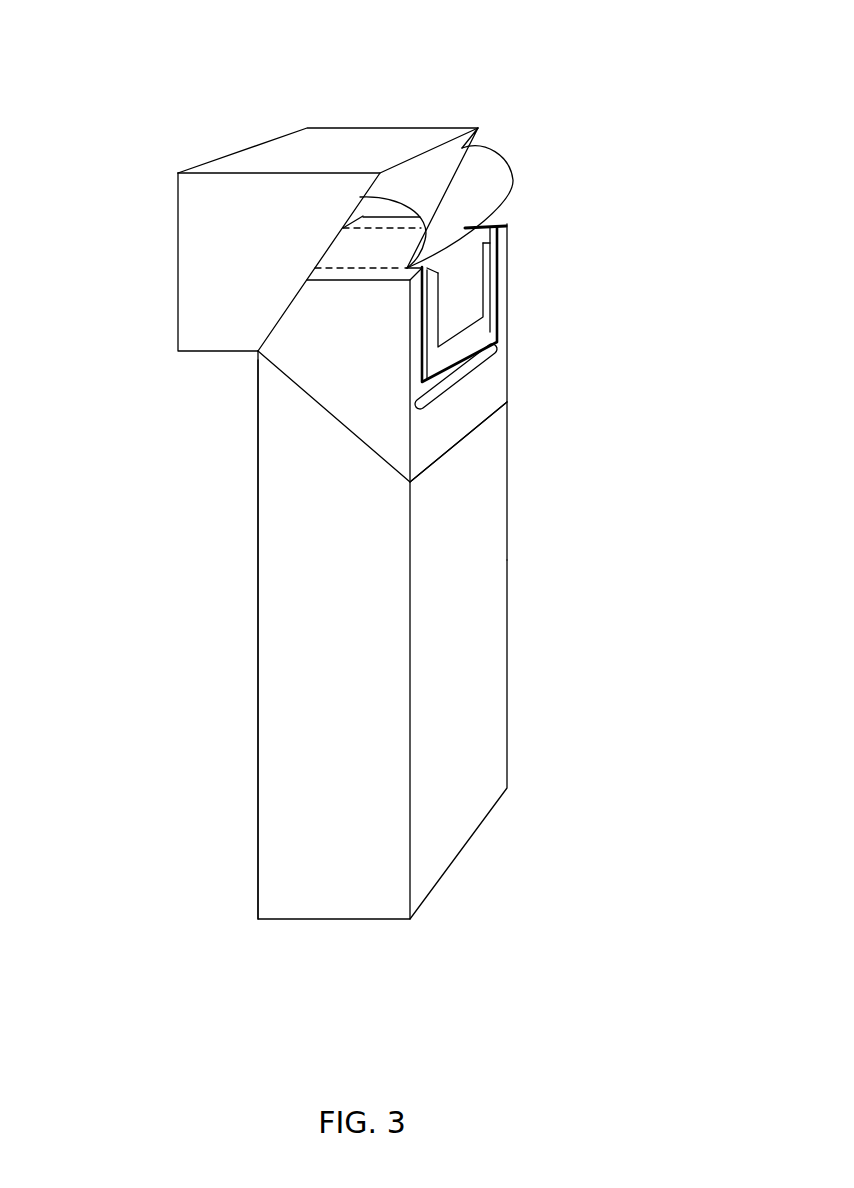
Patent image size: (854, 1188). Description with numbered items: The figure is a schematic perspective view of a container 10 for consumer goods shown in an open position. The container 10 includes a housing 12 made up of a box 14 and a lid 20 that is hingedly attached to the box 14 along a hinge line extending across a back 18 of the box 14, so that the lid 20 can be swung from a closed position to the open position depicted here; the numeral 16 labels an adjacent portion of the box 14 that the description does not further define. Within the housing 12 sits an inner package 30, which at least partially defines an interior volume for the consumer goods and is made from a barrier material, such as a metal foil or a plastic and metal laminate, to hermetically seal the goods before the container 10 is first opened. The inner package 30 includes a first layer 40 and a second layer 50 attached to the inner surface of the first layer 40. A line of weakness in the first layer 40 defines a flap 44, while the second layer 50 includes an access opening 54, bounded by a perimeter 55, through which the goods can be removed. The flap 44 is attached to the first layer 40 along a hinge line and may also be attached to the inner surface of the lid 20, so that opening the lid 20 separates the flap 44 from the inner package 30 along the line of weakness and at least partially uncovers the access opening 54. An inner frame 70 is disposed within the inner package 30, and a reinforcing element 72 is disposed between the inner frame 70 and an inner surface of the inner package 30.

The container 10 is at (580, 641).
The housing 12 is at (165, 643).
The box 14 is at (497, 542).
The rear edge 16 is at (497, 749).
The back 18 is at (255, 773).
The lid 20 is at (189, 330).
The inner package 30 is at (490, 380).
The first layer 40 is at (478, 407).
The flap 44 is at (404, 132).
The second layer 50 is at (448, 152).
The access opening 54 is at (430, 309).
The perimeter 55 is at (482, 173).
The inner frame 70 is at (486, 258).
The reinforcing element 72 is at (492, 342).